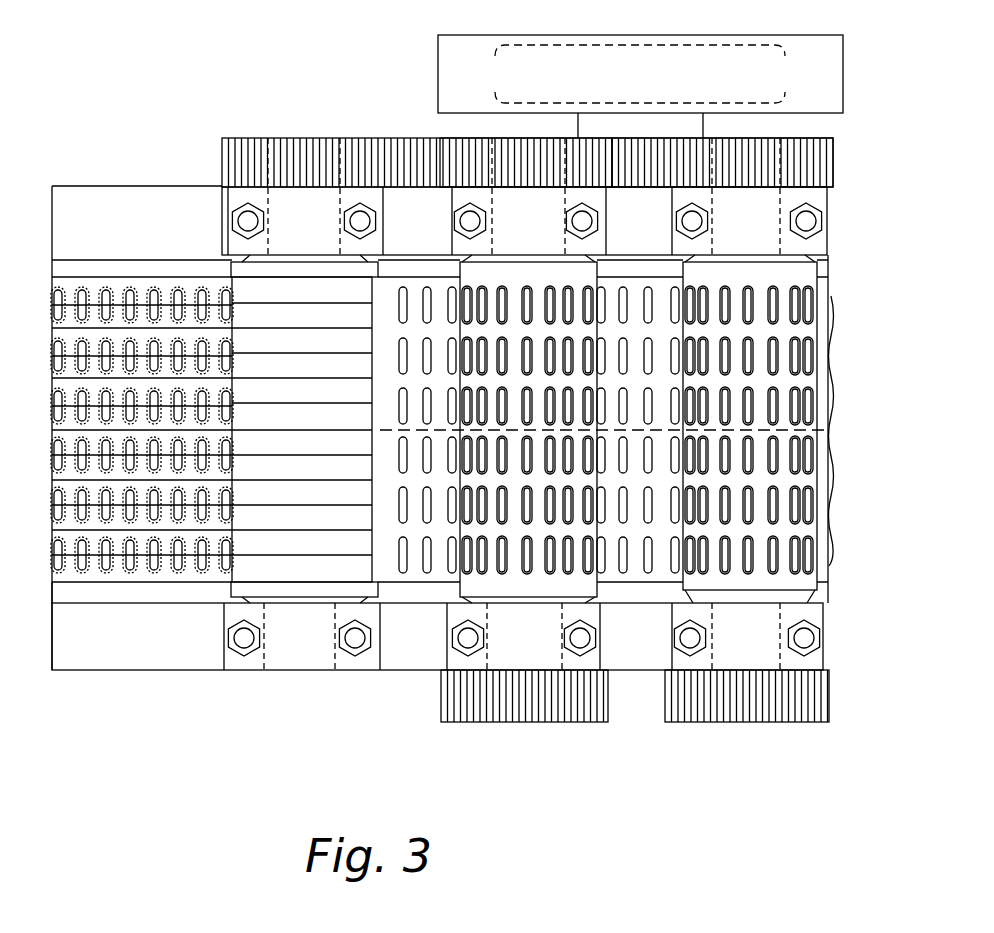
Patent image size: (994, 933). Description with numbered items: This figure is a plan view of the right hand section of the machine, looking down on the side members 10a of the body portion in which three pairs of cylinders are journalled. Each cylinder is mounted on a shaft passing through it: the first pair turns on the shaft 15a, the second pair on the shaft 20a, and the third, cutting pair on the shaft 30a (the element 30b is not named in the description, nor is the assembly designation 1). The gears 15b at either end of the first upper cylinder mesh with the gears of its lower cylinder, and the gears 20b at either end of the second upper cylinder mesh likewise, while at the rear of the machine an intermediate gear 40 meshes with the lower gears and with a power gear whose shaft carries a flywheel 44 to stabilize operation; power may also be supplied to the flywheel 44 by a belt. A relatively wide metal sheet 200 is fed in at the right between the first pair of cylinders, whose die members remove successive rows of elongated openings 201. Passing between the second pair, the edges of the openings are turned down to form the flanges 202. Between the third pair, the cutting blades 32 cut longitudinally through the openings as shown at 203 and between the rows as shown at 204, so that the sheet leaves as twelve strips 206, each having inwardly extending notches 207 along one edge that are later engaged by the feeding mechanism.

The chain assembly 1 is at (97, 419).
The side members 10a is at (151, 200).
The shaft 15a is at (748, 215).
The gears 15b is at (822, 140).
The shaft 20a is at (525, 222).
The gears 20b is at (585, 157).
The shaft 30a is at (302, 220).
The left toothed bar 30b is at (250, 165).
The cutting blades 32 is at (307, 320).
The intermediate gear 40 is at (662, 138).
The flywheel 44 is at (472, 46).
The metal sheet 200 is at (831, 296).
The elongated openings 201 is at (648, 592).
The flanges 202 is at (425, 590).
The longitudinal cuts 203 is at (165, 568).
The cuts between rows 204 is at (115, 572).
The strips 206 is at (122, 290).
The notches 207 is at (84, 290).